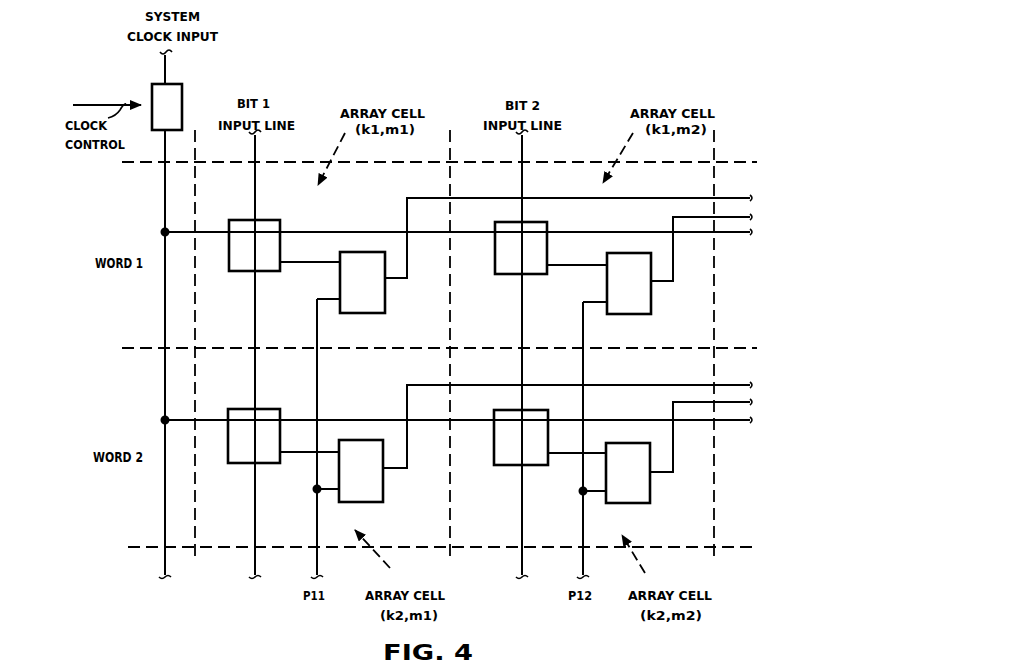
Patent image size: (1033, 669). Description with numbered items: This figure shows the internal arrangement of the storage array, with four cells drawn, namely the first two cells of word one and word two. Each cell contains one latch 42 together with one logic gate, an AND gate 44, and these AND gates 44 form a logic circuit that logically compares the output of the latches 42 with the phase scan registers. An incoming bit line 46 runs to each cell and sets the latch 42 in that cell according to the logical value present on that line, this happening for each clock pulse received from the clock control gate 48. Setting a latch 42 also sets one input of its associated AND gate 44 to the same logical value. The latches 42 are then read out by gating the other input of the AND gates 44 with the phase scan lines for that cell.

The clock control gate 48 is at (190, 72).
The incoming bit line 46 is at (255, 184).
The latch 42 is at (262, 272).
The AND gate 44 is at (385, 305).